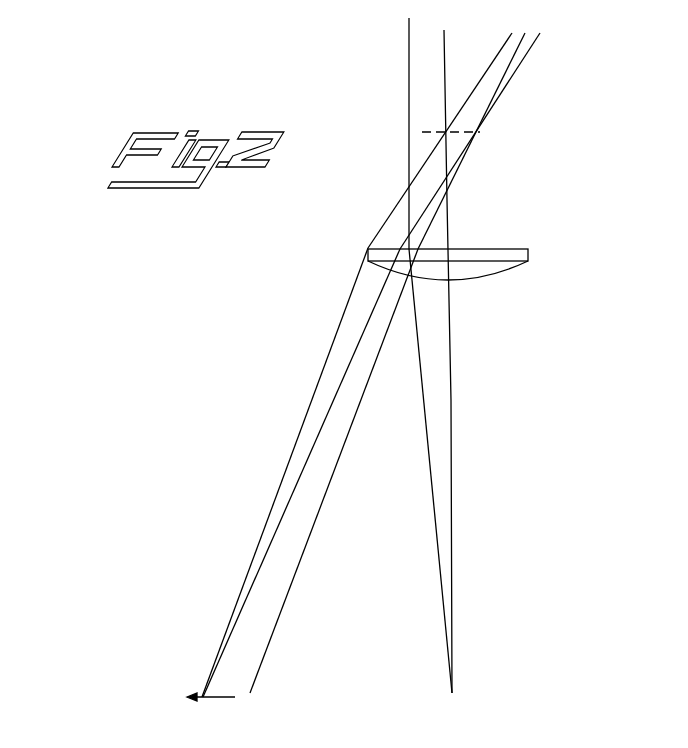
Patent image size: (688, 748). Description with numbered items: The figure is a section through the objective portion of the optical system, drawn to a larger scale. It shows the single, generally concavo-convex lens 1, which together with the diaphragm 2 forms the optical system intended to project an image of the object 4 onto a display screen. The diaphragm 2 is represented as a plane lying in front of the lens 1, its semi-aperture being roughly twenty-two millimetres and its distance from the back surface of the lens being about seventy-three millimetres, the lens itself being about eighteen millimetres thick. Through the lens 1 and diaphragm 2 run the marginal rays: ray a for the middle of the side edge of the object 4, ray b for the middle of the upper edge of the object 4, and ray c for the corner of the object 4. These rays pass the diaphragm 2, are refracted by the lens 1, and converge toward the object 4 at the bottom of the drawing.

The lens 1 is at (537, 260).
The diaphragm 2 is at (396, 132).
The object 4 is at (466, 686).
The edge ray for the middle of the side edge a is at (500, 52).
The edge ray for the middle of the upper-lower edge b is at (512, 70).
The edge ray for the corner c is at (527, 55).